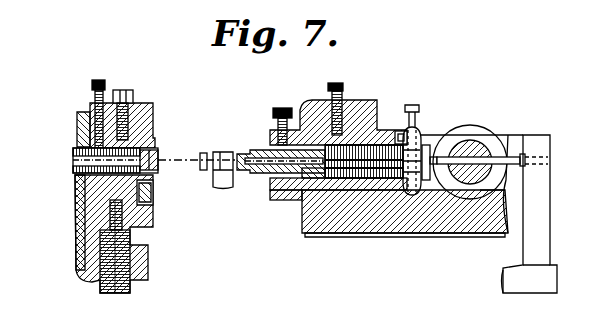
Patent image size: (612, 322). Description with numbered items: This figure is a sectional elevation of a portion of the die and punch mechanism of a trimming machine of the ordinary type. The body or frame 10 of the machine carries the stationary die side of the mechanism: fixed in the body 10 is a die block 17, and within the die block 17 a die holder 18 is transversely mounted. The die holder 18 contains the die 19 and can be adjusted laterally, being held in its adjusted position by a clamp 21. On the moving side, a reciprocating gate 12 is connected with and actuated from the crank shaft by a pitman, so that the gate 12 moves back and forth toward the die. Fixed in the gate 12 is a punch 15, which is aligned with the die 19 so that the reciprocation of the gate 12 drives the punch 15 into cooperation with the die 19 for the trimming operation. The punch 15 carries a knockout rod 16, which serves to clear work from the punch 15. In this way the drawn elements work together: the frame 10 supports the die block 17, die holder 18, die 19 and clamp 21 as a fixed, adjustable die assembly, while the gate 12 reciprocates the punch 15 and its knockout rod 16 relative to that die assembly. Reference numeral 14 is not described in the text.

The body or frame 10 is at (77, 265).
The reciprocating gate 12 is at (356, 101).
The cap screw 14 is at (310, 128).
The punch 15 is at (254, 151).
The knockout rod 16 is at (268, 176).
The die block 17 is at (153, 214).
The die holder 18 is at (155, 132).
The die 19 is at (158, 176).
The clamp 21 is at (150, 106).